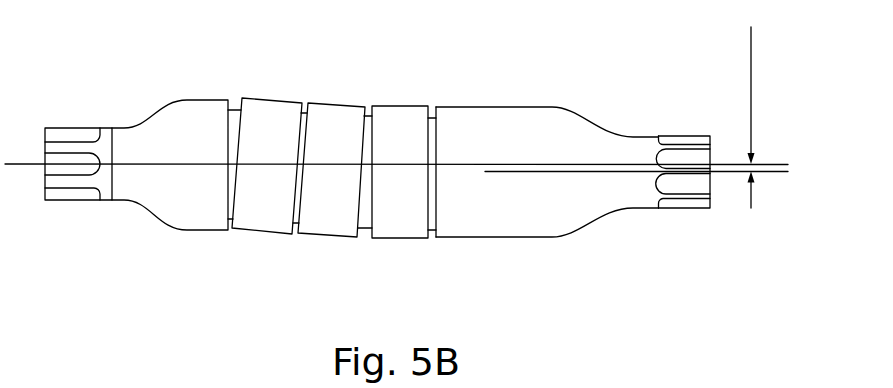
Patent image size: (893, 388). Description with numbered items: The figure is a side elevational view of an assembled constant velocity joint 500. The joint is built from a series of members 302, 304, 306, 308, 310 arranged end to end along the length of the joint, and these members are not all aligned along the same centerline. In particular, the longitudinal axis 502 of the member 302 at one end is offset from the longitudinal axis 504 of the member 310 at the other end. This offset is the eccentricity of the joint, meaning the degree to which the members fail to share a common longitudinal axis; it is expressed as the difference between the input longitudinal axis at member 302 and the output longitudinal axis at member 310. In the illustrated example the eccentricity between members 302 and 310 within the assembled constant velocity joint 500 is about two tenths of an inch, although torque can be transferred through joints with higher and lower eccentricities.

The assembled constant velocity joint 500 is at (595, 66).
The member 302 is at (183, 112).
The member 304 is at (278, 112).
The member 306 is at (340, 110).
The member 308 is at (407, 110).
The member 310 is at (493, 112).
The longitudinal axis 502 is at (133, 167).
The longitudinal axis 504 is at (628, 174).